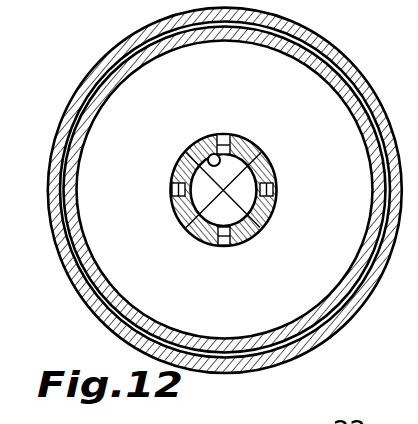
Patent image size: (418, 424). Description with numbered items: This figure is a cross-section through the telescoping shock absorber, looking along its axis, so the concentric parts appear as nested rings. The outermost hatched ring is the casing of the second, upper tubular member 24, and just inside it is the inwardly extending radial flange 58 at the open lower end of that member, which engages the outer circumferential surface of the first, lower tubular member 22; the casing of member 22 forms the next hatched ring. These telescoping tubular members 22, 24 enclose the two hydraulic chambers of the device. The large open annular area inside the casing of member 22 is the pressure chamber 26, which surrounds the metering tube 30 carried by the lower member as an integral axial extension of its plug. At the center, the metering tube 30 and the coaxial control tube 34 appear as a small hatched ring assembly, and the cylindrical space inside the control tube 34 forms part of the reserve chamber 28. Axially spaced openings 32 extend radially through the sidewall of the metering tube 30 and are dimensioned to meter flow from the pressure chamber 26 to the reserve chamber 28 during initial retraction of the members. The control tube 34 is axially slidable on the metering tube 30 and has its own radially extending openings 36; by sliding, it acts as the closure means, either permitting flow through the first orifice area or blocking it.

The first tubular member 22 is at (341, 92).
The second tubular member 24 is at (326, 43).
The pressure chamber 26 is at (342, 204).
The reserve chamber 28 is at (240, 205).
The metering tube 30 is at (272, 215).
The openings 32 is at (224, 246).
The control tube 34 is at (240, 141).
The openings 36 is at (200, 143).
The radial flange 58 is at (341, 58).